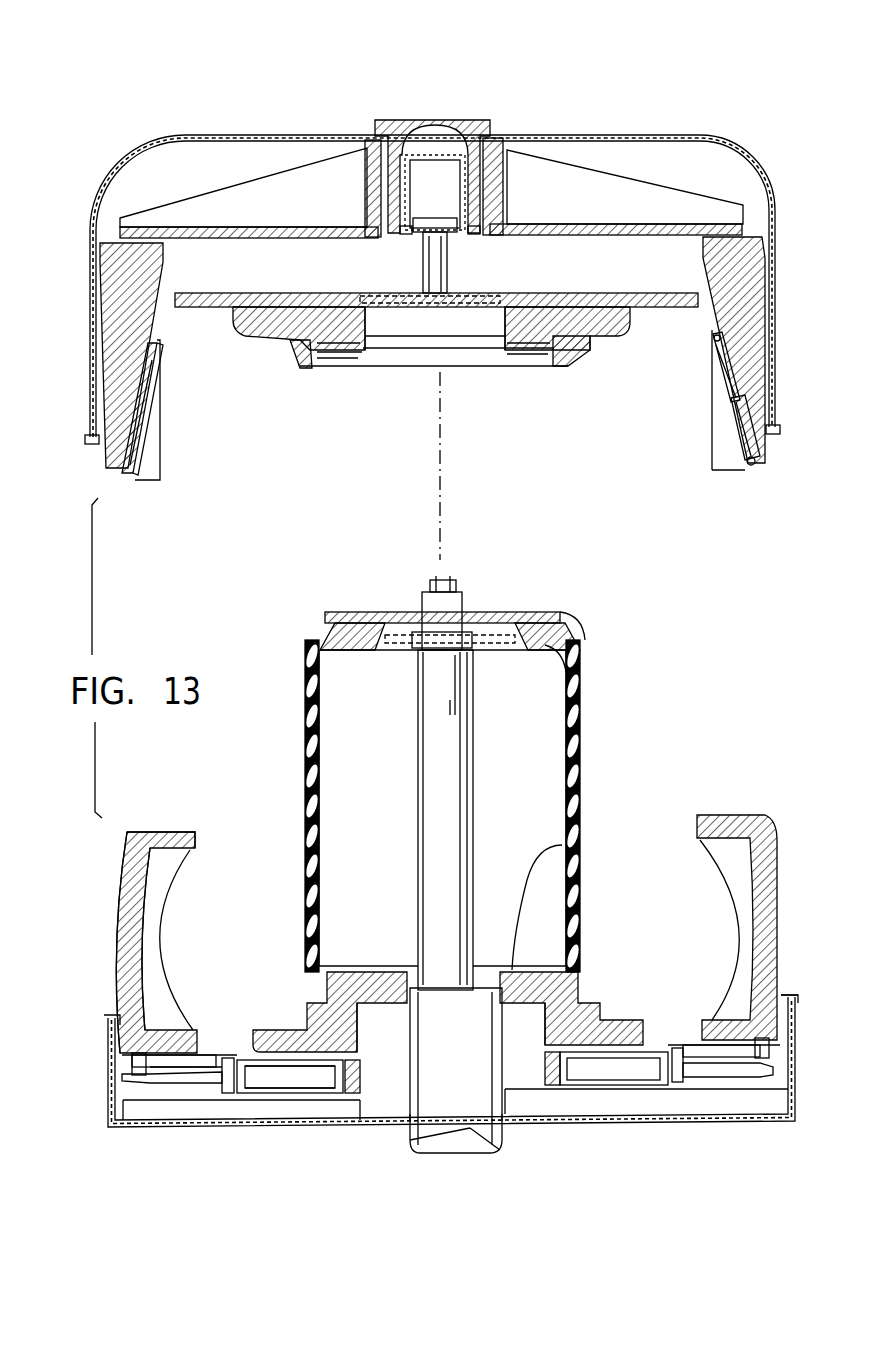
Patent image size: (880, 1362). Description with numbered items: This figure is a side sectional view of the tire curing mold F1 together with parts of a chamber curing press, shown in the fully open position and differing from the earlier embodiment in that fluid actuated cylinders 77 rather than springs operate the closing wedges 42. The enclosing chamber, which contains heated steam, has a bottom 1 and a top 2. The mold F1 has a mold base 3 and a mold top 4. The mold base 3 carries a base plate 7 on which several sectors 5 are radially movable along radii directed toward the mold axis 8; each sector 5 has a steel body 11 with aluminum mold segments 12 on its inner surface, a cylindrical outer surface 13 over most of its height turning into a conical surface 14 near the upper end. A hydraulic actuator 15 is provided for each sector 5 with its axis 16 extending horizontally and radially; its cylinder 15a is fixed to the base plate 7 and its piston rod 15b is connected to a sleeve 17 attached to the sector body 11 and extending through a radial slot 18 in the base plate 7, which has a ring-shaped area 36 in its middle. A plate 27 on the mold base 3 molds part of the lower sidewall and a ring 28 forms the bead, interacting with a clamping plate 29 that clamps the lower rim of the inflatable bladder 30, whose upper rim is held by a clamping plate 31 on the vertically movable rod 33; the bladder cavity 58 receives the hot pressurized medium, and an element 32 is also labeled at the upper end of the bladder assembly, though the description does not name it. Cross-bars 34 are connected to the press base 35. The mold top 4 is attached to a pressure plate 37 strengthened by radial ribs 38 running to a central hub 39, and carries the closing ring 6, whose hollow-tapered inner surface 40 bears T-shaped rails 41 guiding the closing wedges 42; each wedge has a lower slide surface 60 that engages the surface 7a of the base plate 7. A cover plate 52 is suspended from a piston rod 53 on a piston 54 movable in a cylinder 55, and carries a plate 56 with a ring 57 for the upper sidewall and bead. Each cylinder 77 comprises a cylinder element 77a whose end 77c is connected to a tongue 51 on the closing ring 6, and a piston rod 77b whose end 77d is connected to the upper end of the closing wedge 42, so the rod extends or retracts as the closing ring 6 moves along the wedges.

The bottom 1 is at (798, 1059).
The top 2 is at (776, 302).
The mold base 3 is at (782, 935).
The mold top 4 is at (492, 98).
The sectors 5 is at (198, 838).
The closing ring 6 is at (703, 270).
The base plate 7 is at (214, 1058).
The surface of the base plate 7a is at (788, 995).
The mold axis 8 is at (442, 735).
The body 11 is at (120, 900).
The mold segments 12 is at (165, 856).
The cylindrical outer surface 13 is at (116, 942).
The conical surface 14 is at (128, 845).
The hydraulic actuator 15 is at (262, 1085).
The cylinder 15a is at (293, 1083).
The piston rod 15b is at (200, 1086).
The axis of the actuator 16 is at (306, 1078).
The sleeve 17 is at (132, 1064).
The radial slot 18 is at (178, 1072).
The plate 27 is at (628, 1022).
The ring 28 is at (574, 999).
The clamping plate 29 is at (576, 855).
The inflatable bladder 30 is at (572, 813).
The clamping plate 31 is at (578, 670).
The top cap 32 is at (553, 613).
The movable rod 33 is at (463, 707).
The cross-bars 34 is at (633, 1105).
The press base 35 is at (545, 1127).
The ring-shaped area 36 is at (358, 1088).
The pressure plate 37 is at (610, 224).
The strengthening ribs 38 is at (548, 187).
The hub 39 is at (365, 180).
The hollow-tapered inner surface 40 is at (150, 357).
The rails 41 is at (142, 412).
The closing wedges 42 is at (706, 406).
The tongue 51 is at (747, 463).
The cover plate 52 is at (596, 302).
The piston rod 53 is at (450, 265).
The piston 54 is at (443, 220).
The cylinder 55 is at (413, 177).
The plate 56 is at (250, 336).
The ring 57 is at (306, 366).
The curing bladder cavity 58 is at (540, 768).
The lower slide surface 60 is at (140, 482).
The cylinders 77 is at (728, 416).
The cylinder element 77a is at (745, 447).
The piston rod 77b is at (722, 370).
The end of the cylinder element 77c is at (712, 470).
The end of the piston rod 77d is at (714, 339).
The mold F1 is at (240, 112).